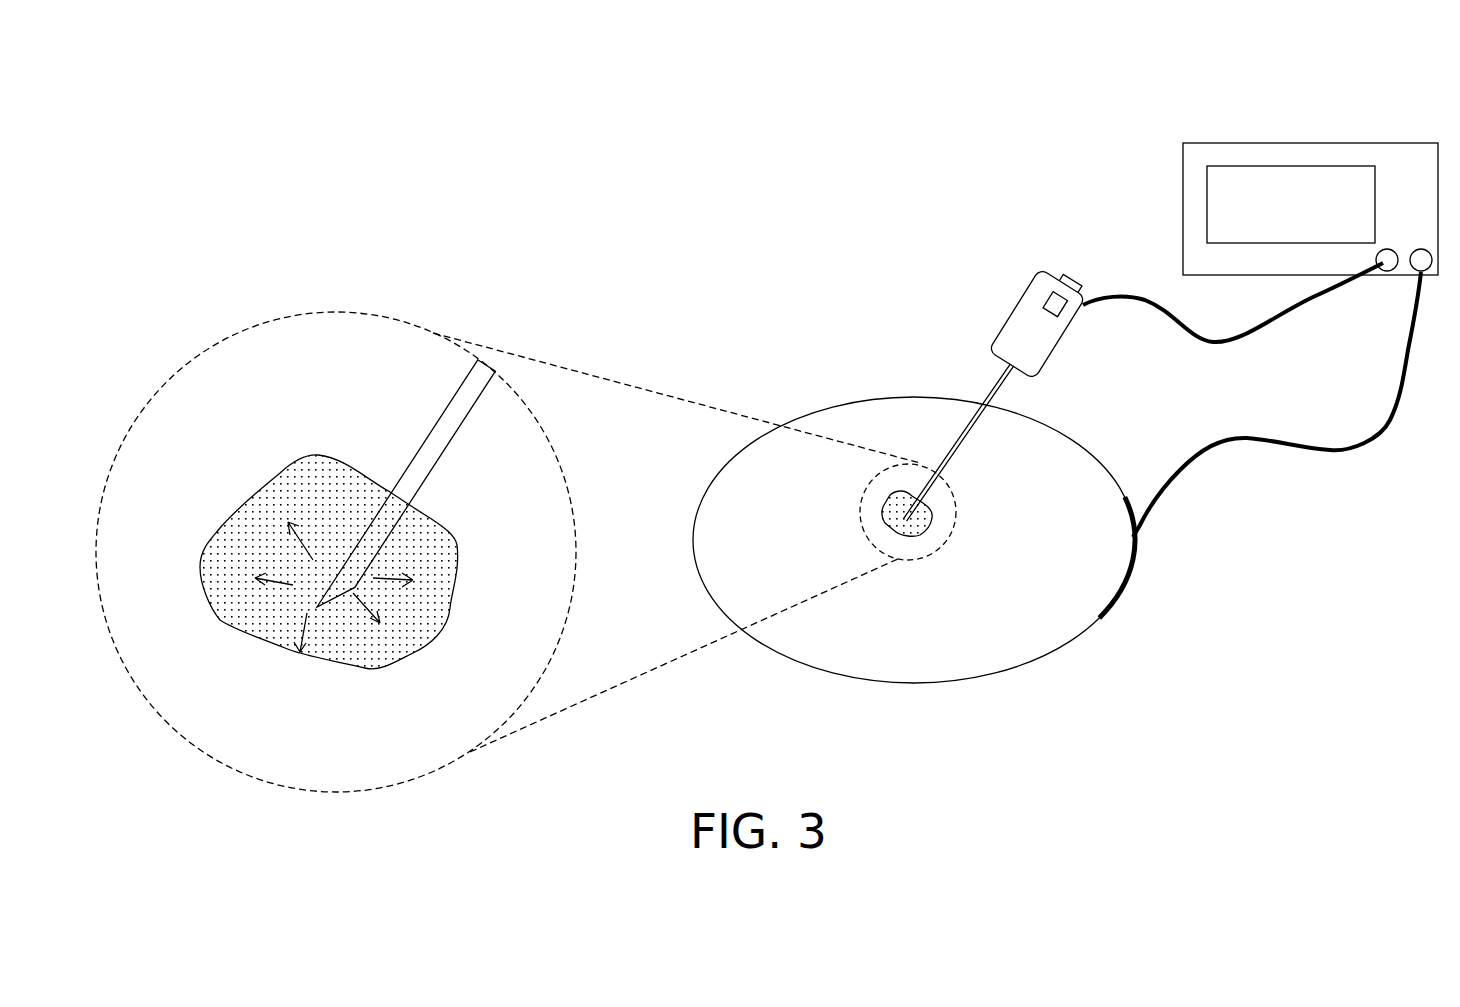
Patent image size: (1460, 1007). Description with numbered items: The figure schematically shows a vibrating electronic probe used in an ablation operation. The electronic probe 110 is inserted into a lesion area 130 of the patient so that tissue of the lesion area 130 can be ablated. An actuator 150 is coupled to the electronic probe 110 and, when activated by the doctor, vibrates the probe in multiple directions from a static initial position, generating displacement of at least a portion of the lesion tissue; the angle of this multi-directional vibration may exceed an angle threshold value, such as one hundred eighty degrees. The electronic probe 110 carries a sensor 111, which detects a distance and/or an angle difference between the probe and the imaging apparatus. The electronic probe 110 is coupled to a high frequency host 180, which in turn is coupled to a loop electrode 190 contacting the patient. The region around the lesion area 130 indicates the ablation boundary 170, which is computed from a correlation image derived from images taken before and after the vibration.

The electronic probe 110 is at (422, 432).
The sensor 111 is at (1052, 303).
The lesion area 130 is at (277, 475).
The actuator 150 is at (1082, 272).
The ablation boundary 170 is at (337, 312).
The high frequency host 180 is at (1375, 143).
The loop electrode 190 is at (1130, 575).